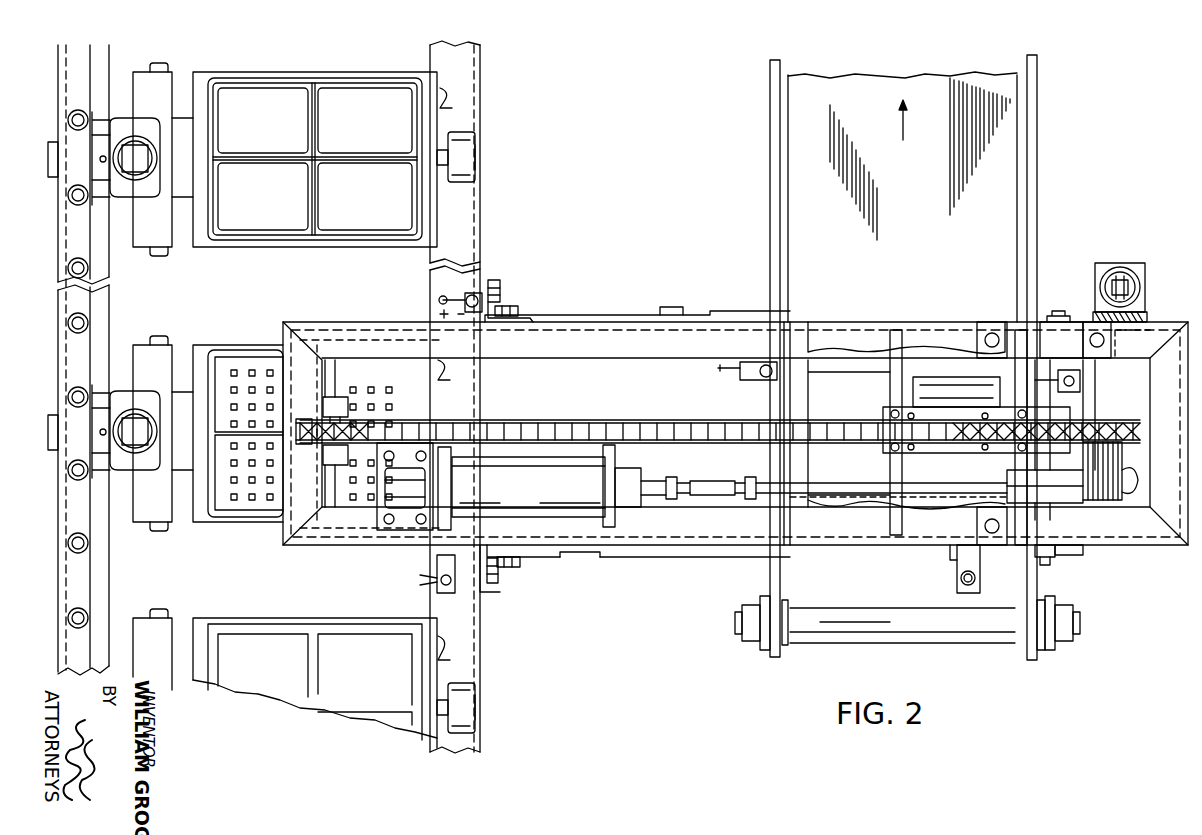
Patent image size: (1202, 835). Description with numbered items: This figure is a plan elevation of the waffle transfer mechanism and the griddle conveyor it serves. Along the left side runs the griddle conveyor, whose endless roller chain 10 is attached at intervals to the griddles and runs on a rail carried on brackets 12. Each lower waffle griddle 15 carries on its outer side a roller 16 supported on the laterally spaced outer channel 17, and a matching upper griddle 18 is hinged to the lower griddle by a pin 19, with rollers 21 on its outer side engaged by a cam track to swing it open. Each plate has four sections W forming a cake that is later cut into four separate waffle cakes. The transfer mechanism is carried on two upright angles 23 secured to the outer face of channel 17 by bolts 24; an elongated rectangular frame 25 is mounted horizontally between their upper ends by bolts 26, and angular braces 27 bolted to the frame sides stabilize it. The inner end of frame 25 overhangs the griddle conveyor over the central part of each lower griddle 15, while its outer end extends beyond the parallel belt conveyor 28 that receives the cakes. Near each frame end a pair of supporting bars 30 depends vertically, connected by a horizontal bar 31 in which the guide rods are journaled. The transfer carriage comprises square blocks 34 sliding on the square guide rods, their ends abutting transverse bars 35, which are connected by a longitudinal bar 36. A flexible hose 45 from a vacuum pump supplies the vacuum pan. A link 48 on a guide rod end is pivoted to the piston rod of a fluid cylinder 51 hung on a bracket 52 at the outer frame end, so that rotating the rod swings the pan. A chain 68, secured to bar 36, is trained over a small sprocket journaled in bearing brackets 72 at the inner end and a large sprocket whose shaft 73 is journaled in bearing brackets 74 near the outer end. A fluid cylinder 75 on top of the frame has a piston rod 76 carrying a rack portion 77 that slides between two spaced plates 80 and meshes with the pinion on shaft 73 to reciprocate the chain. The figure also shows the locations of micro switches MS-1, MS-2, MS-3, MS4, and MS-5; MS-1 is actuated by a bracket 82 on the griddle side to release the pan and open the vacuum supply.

The endless roller chain 10 is at (75, 231).
The brackets 12 is at (53, 143).
The lower waffle griddle 15 is at (202, 240).
The roller 16 is at (475, 138).
The outer channel 17 is at (480, 112).
The upper griddle 18 is at (143, 78).
The pin 19 is at (168, 67).
The rollers 21 is at (136, 136).
The upright angles 23 is at (520, 318).
The bolts 24 is at (499, 282).
The rectangular frame 25 is at (836, 322).
The bolts 26 is at (509, 305).
The angular braces 27 is at (596, 316).
The belt conveyor 28 is at (985, 637).
The supporting bars 30 is at (313, 332).
The horizontal bar 31 is at (332, 370).
The square blocks 34 is at (938, 350).
The transverse bars 35 is at (1021, 368).
The longitudinal bar 36 is at (887, 413).
The flexible hose 45 is at (1135, 483).
The link 48 is at (1120, 336).
The fluid cylinder 51 is at (1123, 266).
The bracket 52 is at (1148, 314).
The chain 68 is at (655, 435).
The bearing brackets 72 is at (340, 410).
The shaft 73 is at (1044, 558).
The bearing brackets 74 is at (1056, 322).
The fluid cylinder 75 is at (533, 495).
The piston rod 76 is at (655, 483).
The rack portion 77 is at (971, 487).
The spaced plates 80 is at (1058, 480).
The bracket 82 is at (441, 107).
The sections W is at (252, 90).
The micro switch MS-1 is at (457, 296).
The micro switch MS-2 is at (442, 591).
The micro switch MS-3 is at (967, 591).
The micro switch MS4 is at (1080, 386).
The micro switch MS-5 is at (768, 380).